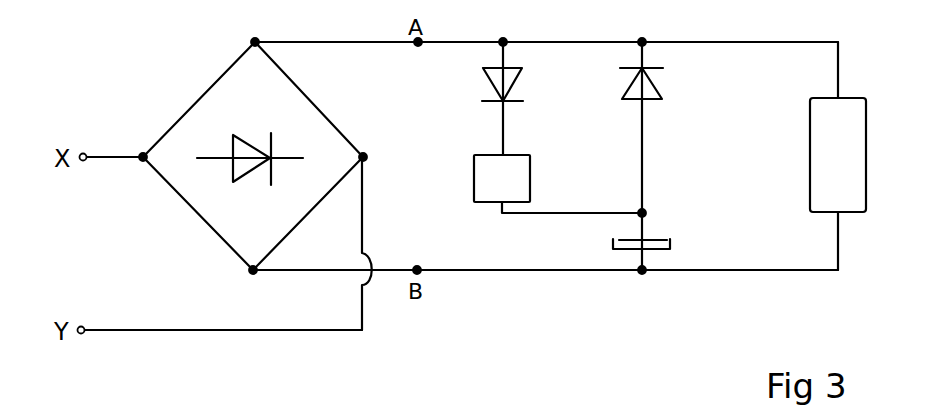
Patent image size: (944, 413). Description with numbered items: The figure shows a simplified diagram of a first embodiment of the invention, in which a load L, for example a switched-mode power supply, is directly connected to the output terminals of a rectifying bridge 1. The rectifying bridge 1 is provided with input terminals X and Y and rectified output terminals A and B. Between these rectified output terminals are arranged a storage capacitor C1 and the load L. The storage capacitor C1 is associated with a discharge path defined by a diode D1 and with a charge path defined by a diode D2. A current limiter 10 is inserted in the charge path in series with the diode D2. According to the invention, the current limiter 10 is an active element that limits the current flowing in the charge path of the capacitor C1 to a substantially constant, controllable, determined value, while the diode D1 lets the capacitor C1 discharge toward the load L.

The rectifying bridge 1 is at (203, 72).
The current limiter 10 is at (473, 175).
The diode D1 is at (662, 154).
The diode D2 is at (522, 96).
The storage capacitor C1 is at (664, 241).
The load L is at (867, 172).